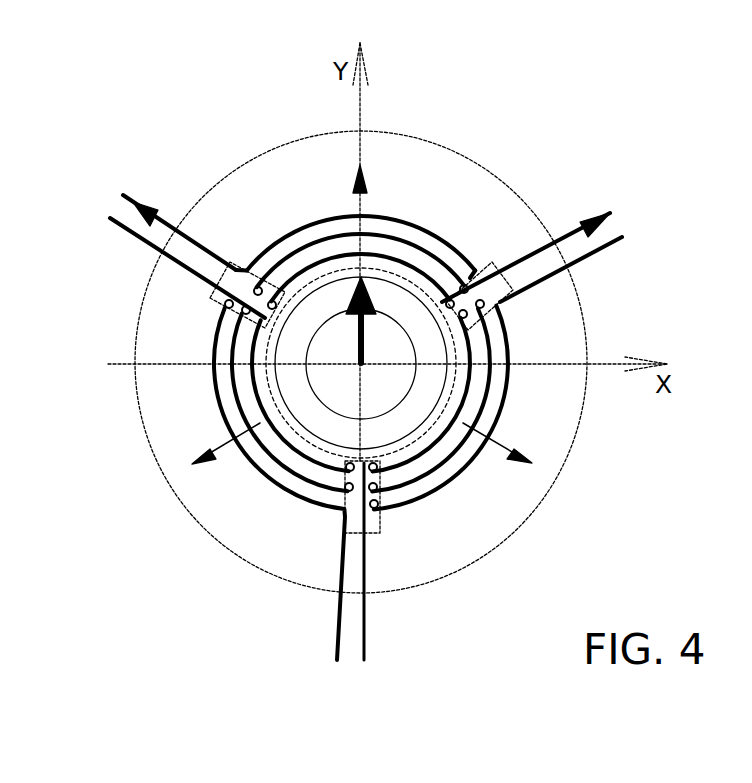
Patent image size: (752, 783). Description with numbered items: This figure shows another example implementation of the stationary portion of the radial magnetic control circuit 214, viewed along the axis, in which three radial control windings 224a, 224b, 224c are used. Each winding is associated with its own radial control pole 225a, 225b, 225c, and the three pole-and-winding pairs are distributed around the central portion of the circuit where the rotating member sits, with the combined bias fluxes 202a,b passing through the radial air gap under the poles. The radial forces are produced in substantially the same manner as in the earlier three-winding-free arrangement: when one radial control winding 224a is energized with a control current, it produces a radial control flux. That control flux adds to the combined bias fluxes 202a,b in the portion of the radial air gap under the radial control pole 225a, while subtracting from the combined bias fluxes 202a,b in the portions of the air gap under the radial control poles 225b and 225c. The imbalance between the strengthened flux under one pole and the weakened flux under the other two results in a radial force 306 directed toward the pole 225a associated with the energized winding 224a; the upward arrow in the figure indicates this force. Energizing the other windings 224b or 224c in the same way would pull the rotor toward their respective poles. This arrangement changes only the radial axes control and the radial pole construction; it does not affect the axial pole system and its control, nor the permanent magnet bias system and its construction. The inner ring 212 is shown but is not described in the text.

The combined bias fluxes 202a,b is at (358, 202).
The inner ring 212 is at (440, 375).
The radial magnetic control circuit 214 is at (142, 442).
The radial control winding 224a is at (448, 242).
The radial control winding 224b is at (445, 497).
The radial control winding 224c is at (273, 485).
The radial control pole 225a is at (395, 205).
The radial control pole 225b is at (475, 457).
The radial control pole 225c is at (300, 510).
The radial force 306 is at (359, 338).